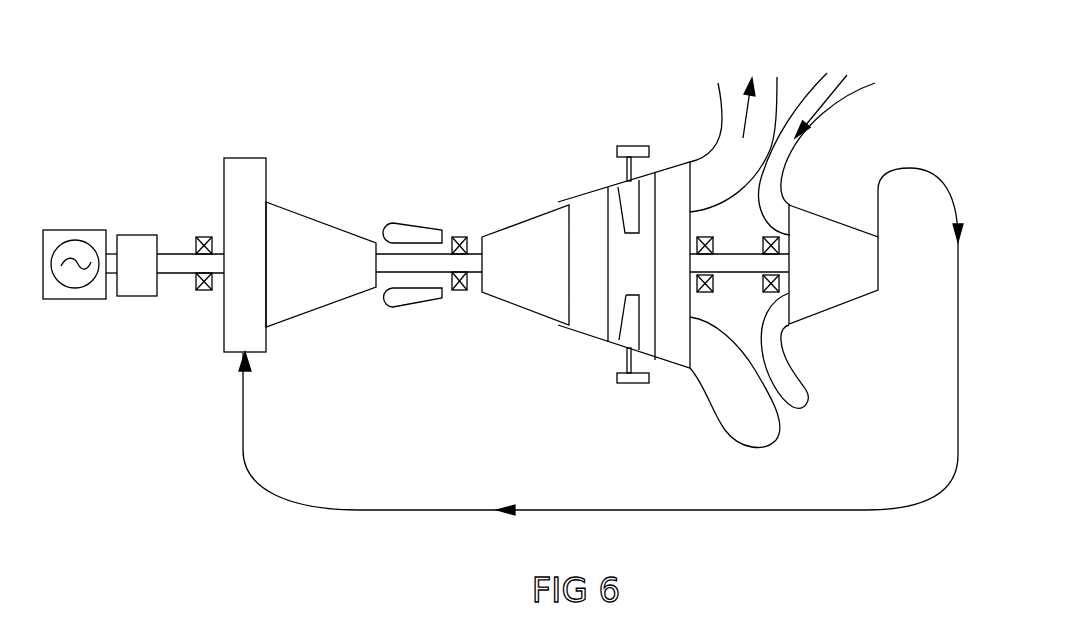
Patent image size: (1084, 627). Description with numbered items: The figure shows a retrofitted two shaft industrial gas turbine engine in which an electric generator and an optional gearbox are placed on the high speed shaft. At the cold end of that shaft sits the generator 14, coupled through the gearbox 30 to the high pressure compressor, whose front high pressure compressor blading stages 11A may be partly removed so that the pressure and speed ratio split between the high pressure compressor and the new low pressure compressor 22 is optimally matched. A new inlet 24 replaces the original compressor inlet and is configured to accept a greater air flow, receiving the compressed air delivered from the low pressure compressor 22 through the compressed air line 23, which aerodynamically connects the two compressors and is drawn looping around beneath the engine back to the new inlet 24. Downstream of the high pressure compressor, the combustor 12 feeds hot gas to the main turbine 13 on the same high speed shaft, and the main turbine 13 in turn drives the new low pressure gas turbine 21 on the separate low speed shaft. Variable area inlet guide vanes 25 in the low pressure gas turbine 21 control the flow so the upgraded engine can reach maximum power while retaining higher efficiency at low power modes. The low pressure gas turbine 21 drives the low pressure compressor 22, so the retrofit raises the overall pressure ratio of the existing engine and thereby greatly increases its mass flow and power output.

The generator 14 is at (73, 252).
The gearbox 30 is at (137, 244).
The new inlet 24 is at (244, 187).
The high pressure compressor blading stages 11A is at (307, 245).
The combustor 12 is at (403, 232).
The turbine 13 is at (526, 247).
The low pressure gas turbine 21 is at (675, 187).
The variable area inlet guide vanes 25 is at (638, 153).
The low pressure compressor 22 is at (825, 228).
The compressed air line 23 is at (727, 510).